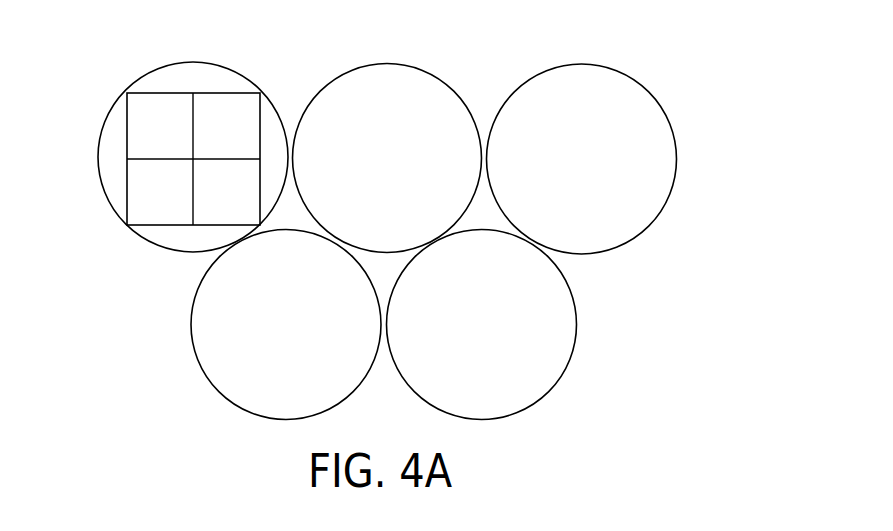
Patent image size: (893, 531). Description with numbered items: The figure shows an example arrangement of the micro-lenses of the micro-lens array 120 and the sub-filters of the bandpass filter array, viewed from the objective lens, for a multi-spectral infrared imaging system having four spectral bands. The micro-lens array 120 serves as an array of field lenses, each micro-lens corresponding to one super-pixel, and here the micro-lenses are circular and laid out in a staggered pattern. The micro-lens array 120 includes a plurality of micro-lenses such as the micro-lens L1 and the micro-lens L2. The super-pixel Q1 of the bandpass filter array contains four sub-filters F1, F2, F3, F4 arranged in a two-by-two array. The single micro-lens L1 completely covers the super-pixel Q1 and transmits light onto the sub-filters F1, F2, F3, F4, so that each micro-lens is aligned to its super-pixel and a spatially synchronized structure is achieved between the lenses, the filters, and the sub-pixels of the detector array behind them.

The micro-lens array 120 is at (411, 216).
The micro-lens L1 is at (110, 118).
The micro-lens L2 is at (202, 375).
The super-pixel Q1 is at (213, 118).
The sub-filter F1 is at (160, 126).
The sub-filter F2 is at (160, 192).
The sub-filter F3 is at (226, 126).
The sub-filter F4 is at (226, 192).